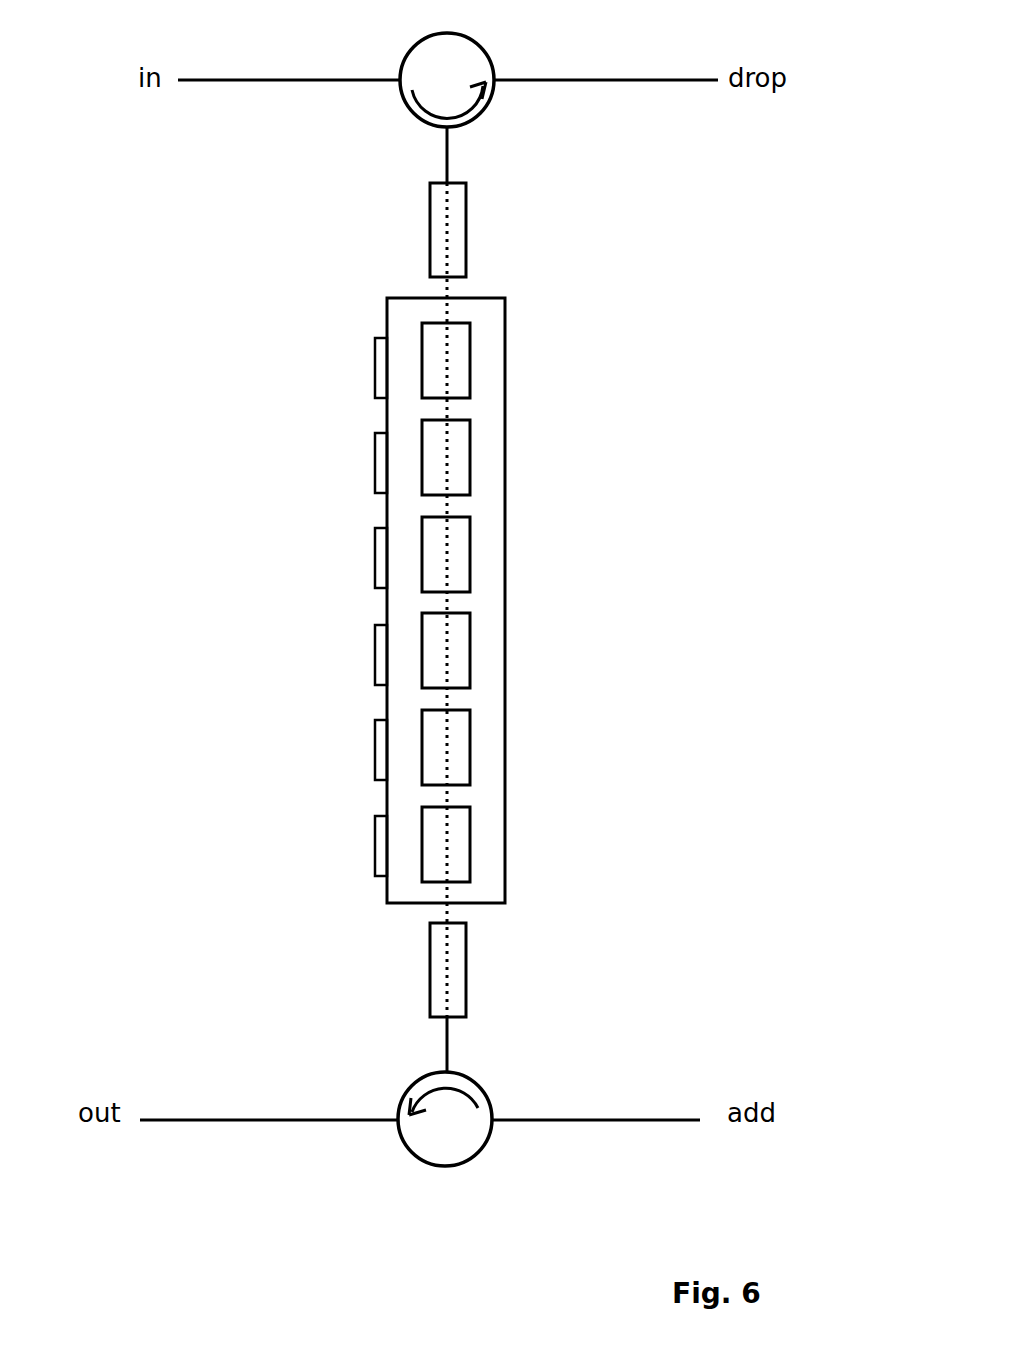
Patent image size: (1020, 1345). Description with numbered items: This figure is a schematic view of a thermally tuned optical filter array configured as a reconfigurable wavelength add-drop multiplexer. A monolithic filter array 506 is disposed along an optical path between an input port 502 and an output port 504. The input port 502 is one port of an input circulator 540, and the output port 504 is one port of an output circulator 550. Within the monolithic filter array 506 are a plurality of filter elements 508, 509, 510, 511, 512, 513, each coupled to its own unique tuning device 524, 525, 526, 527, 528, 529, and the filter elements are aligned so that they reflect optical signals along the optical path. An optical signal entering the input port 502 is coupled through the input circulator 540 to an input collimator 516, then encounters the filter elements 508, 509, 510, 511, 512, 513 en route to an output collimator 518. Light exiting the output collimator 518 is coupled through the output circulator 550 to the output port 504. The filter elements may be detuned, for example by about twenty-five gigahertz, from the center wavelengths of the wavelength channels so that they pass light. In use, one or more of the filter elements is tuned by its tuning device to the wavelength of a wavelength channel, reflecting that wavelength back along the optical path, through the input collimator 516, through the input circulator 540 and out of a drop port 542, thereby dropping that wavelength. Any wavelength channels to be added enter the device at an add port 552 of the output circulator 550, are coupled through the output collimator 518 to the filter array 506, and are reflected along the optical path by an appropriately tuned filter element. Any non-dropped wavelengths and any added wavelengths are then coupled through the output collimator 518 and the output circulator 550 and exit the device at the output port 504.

The input port 502 is at (400, 78).
The output port 504 is at (397, 1121).
The monolithic filter array 506 is at (505, 573).
The filter element 508 is at (470, 354).
The filter element 509 is at (470, 444).
The filter element 510 is at (470, 541).
The filter element 511 is at (470, 638).
The filter element 512 is at (470, 735).
The filter element 513 is at (470, 832).
The input collimator 516 is at (430, 233).
The output collimator 518 is at (430, 965).
The tuning device 524 is at (375, 361).
The tuning device 525 is at (375, 464).
The tuning device 526 is at (375, 558).
The tuning device 527 is at (375, 655).
The tuning device 528 is at (375, 747).
The tuning device 529 is at (375, 842).
The input circulator 540 is at (480, 116).
The drop port 542 is at (495, 78).
The output circulator 550 is at (477, 1082).
The add port 552 is at (493, 1123).